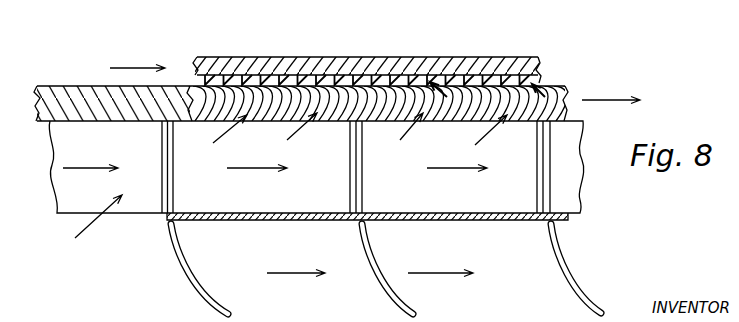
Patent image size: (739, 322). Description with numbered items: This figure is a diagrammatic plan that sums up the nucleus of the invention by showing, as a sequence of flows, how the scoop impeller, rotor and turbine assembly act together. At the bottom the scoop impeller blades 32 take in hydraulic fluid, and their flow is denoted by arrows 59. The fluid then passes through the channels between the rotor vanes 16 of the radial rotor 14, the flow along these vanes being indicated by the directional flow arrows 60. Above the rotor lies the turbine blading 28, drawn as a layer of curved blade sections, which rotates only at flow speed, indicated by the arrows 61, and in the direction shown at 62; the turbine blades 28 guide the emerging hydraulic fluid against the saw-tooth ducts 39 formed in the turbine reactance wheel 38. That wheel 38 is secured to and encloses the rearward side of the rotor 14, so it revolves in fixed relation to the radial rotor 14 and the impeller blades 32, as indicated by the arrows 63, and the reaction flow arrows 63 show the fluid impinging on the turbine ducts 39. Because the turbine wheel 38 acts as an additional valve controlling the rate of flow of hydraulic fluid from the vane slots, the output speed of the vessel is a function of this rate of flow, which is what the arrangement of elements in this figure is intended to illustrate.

The rotor 14 is at (580, 189).
The rotor vanes 16 is at (174, 187).
The turbine blades 28 is at (560, 92).
The scoop impeller blades 32 is at (198, 281).
The turbine reactance wheel 38 is at (455, 58).
The saw-tooth ducts 39 is at (393, 78).
The flow arrows of scoop impeller blades 59 is at (370, 260).
The directional flow arrows of rotor vanes 60 is at (357, 157).
The flow speed arrows 61 is at (295, 137).
The directional arrow of turbine blading 62 is at (592, 102).
The reaction flow arrows 63 is at (143, 68).